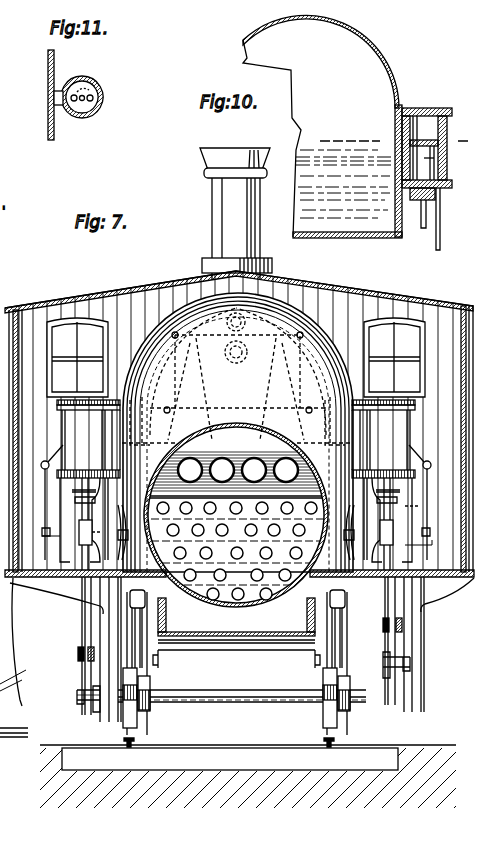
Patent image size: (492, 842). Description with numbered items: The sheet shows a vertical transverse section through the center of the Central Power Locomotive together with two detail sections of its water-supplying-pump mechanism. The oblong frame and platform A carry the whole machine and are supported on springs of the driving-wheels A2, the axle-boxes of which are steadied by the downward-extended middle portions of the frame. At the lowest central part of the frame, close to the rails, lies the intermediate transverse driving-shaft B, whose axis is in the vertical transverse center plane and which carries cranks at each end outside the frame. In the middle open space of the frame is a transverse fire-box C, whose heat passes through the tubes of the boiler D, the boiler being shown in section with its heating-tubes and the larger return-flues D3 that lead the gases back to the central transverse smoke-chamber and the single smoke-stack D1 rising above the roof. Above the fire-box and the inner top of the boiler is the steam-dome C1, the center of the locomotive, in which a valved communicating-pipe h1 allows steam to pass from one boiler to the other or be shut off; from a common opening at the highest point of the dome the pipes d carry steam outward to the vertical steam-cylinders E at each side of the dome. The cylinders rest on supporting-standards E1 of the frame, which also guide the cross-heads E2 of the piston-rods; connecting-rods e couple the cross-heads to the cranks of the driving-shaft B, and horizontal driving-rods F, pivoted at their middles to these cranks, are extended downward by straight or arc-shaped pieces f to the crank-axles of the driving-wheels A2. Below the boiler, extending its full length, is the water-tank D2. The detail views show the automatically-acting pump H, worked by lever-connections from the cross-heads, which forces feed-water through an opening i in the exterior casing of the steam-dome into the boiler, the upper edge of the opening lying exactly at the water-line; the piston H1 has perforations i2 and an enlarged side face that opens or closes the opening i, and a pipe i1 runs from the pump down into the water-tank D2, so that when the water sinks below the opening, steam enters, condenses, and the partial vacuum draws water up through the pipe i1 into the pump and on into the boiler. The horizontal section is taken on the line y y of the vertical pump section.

In FIG. 11, the steam-dome C1 is at (48, 70).
In FIG. 10, the steam-dome C1 is at (322, 126).
In FIG. 7, the steam-dome C1 is at (238, 432).
In FIG. 11, the automatically-acting pump H is at (82, 107).
In FIG. 10, the automatically-acting pump H is at (478, 171).
In FIG. 11, the piston of the pump H1 is at (103, 100).
In FIG. 10, the piston of the pump H1 is at (426, 163).
In FIG. 11, the opening in the exterior casing of the steam-dome i is at (54, 99).
In FIG. 10, the opening in the exterior casing of the steam-dome i is at (415, 154).
In FIG. 10, the pipe i1 is at (437, 219).
In FIG. 11, the perforations of the piston i2 is at (97, 89).
In FIG. 10, the perforations of the piston i2 is at (424, 135).
In FIG. 10, the section line y y is at (395, 133).
In FIG. 7, the smoke-stack D1 is at (236, 214).
In FIG. 7, the boiler D is at (236, 515).
In FIG. 7, the water-tank D2 is at (236, 634).
In FIG. 7, the return-flues D3 is at (236, 447).
In FIG. 7, the pipes d is at (237, 376).
In FIG. 7, the valved communicating-pipe h1 is at (236, 362).
In FIG. 7, the vertical steam-cylinder E is at (440, 441).
In FIG. 7, the supporting-standards E1 is at (237, 542).
In FIG. 7, the cross-heads E2 is at (270, 519).
In FIG. 7, the frame and platform A is at (242, 642).
In FIG. 7, the driving-wheels A2 is at (236, 668).
In FIG. 7, the intermediate transverse driving-shaft B is at (242, 709).
In FIG. 7, the fire-box C is at (13, 652).
In FIG. 7, the connecting-rods e is at (236, 614).
In FIG. 7, the horizontal driving-rods F is at (78, 665).
In FIG. 7, the straight or arc-shaped pieces f is at (72, 686).